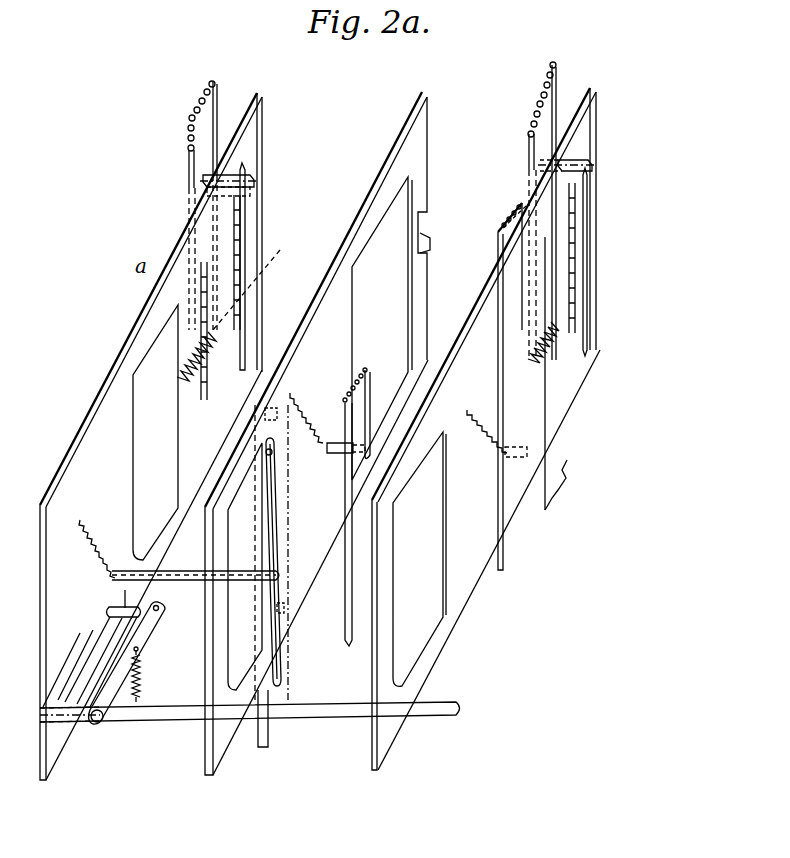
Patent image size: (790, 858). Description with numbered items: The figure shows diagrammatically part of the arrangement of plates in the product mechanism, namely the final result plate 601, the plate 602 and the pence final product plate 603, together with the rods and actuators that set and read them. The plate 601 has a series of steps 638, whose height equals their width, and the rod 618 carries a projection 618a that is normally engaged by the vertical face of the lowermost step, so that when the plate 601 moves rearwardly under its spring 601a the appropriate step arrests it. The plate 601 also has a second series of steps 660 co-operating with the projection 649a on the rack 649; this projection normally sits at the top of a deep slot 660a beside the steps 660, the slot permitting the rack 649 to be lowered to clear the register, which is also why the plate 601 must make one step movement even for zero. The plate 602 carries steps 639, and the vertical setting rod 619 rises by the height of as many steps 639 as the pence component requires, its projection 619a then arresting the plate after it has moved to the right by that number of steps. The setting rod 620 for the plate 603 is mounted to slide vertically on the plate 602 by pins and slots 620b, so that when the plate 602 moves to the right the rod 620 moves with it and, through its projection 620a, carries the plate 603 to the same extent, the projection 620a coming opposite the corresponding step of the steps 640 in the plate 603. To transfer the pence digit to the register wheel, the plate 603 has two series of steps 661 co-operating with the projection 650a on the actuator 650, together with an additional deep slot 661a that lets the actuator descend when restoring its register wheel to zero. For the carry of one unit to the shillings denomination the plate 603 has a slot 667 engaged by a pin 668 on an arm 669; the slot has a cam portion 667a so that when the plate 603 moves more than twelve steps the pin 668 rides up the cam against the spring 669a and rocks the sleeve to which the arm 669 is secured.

The plate 601 is at (388, 725).
The spring 601a is at (567, 273).
The plate 602 is at (225, 737).
The plate 603 is at (210, 343).
The rod 618 is at (515, 543).
The projection 618a is at (510, 450).
The setting rod 619 is at (372, 602).
The projection 619a is at (337, 453).
The setting rod 620 is at (265, 727).
The projection 620a is at (142, 612).
The pins and slots 620b is at (272, 455).
The steps 638 is at (483, 433).
The steps 639 is at (322, 443).
The steps 640 is at (82, 520).
The rack 649 is at (530, 118).
The projection 649a is at (580, 162).
The actuator 650 is at (189, 133).
The projection 650a is at (253, 180).
The steps 660 is at (569, 279).
The slot 660a is at (558, 333).
The steps 661 is at (230, 287).
The slot 661a is at (247, 318).
The slot 667 is at (110, 623).
The cam portion 667a is at (93, 670).
The pin 668 is at (158, 612).
The arm 669 is at (142, 640).
The spring 669a is at (140, 699).